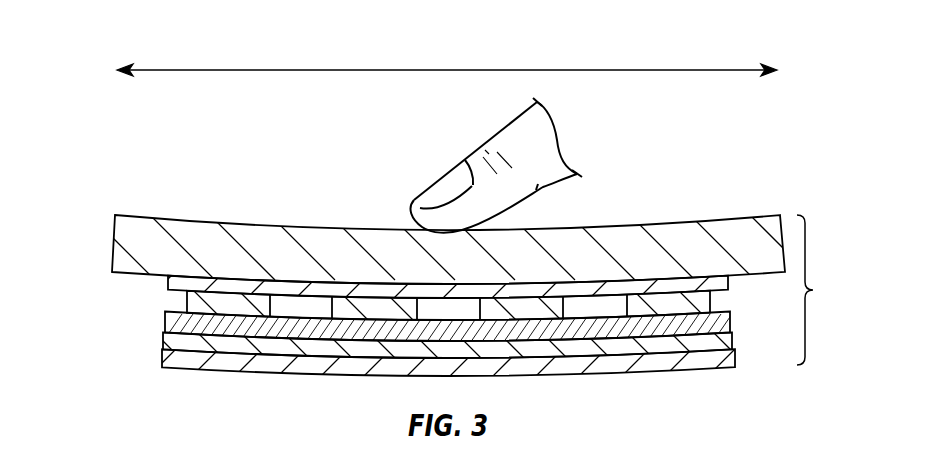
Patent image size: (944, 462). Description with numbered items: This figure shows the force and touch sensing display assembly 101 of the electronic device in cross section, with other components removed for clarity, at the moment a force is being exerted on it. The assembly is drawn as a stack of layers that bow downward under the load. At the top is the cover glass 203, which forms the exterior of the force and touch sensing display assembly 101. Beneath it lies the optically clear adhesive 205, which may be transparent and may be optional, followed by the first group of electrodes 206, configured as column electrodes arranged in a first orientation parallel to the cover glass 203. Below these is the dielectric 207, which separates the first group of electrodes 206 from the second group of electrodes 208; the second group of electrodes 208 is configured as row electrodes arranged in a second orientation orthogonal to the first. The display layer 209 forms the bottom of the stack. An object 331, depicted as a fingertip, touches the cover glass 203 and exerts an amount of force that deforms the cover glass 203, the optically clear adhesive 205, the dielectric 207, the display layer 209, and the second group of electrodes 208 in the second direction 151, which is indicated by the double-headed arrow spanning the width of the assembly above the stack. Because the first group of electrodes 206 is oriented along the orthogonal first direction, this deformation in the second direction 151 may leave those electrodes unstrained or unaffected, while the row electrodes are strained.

The force and touch sensing display assembly 101 is at (823, 290).
The second direction 151 is at (522, 69).
The cover glass 203 is at (112, 243).
The optically clear adhesive 205 is at (167, 281).
The first group of electrodes 206 is at (186, 299).
The dielectric 207 is at (164, 319).
The second group of electrodes 208 is at (162, 337).
The display layer 209 is at (161, 357).
The object 331 is at (467, 158).